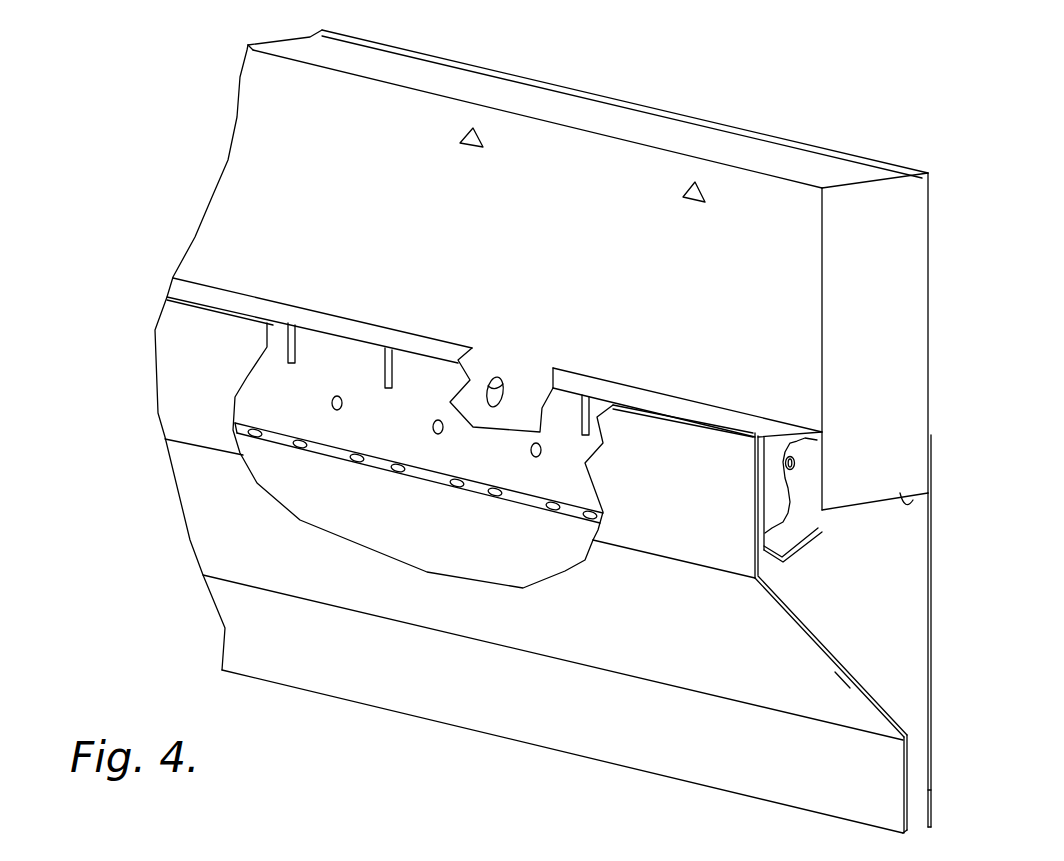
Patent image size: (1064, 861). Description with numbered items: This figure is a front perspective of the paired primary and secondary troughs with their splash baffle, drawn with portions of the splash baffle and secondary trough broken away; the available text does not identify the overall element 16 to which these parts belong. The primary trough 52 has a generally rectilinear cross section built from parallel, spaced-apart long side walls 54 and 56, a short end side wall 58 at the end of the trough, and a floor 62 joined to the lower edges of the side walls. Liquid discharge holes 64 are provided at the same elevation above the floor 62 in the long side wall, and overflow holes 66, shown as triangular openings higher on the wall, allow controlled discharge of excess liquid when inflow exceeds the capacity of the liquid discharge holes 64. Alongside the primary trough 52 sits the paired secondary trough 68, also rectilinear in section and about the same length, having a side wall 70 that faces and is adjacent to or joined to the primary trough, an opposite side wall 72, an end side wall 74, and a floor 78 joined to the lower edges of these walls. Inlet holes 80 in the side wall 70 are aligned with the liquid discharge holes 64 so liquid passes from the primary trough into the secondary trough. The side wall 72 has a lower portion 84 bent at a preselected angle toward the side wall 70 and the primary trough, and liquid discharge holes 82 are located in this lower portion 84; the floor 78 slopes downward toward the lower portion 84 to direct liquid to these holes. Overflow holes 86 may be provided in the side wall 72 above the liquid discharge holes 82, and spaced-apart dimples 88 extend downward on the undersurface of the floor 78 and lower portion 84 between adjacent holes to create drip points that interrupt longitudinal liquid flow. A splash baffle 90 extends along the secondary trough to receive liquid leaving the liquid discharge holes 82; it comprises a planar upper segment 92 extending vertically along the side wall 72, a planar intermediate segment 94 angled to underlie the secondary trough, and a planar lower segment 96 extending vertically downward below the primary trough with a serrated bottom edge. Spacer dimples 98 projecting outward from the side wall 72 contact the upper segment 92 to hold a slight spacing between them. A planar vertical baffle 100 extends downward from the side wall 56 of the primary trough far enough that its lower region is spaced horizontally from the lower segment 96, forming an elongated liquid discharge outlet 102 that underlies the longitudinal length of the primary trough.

The door 16 is at (937, 199).
The primary trough 52 is at (937, 245).
The side wall 54 is at (625, 155).
The side wall 56 is at (838, 170).
The side wall 58 is at (917, 305).
The floor 62 is at (907, 497).
The liquid discharge holes 64 is at (500, 382).
The overflow holes 66 is at (480, 140).
The secondary trough 68 is at (807, 547).
The side wall 70 is at (745, 422).
The side wall 72 is at (570, 398).
The side wall 74 is at (770, 480).
The floor 78 is at (800, 528).
The inlet holes 80 is at (797, 462).
The liquid discharge holes 82 is at (397, 470).
The lower portion 84 is at (432, 472).
The overflow holes 86 is at (385, 362).
The dimples 88 is at (355, 463).
The splash baffle 90 is at (808, 612).
The upper segment 92 is at (650, 425).
The intermediate segment 94 is at (835, 672).
The lower segment 96 is at (890, 750).
The spacer dimples 98 is at (332, 403).
The vertical baffle 100 is at (922, 610).
The liquid discharge outlet 102 is at (920, 798).